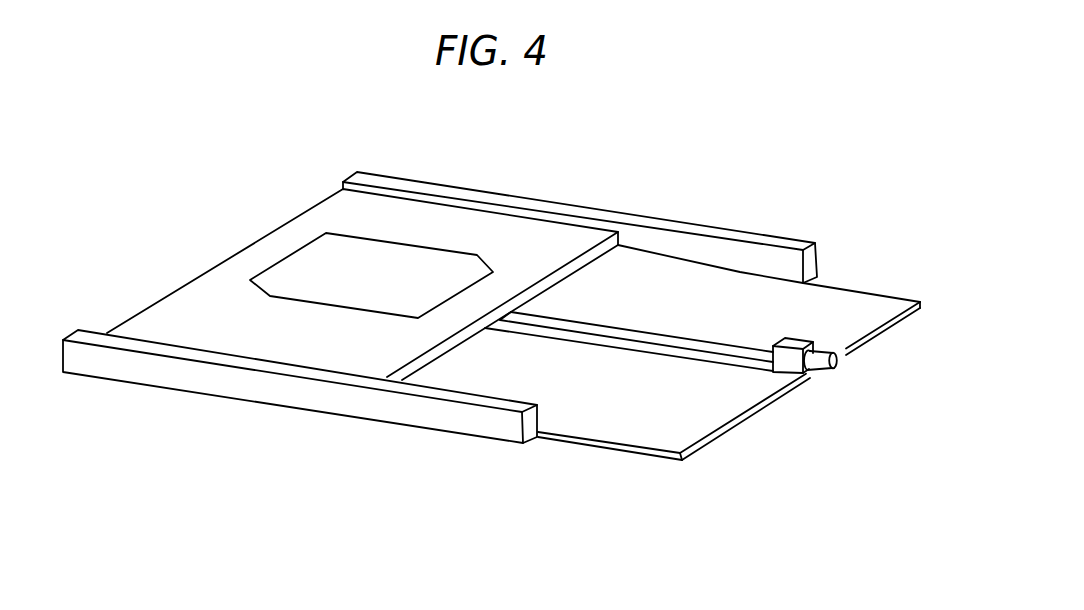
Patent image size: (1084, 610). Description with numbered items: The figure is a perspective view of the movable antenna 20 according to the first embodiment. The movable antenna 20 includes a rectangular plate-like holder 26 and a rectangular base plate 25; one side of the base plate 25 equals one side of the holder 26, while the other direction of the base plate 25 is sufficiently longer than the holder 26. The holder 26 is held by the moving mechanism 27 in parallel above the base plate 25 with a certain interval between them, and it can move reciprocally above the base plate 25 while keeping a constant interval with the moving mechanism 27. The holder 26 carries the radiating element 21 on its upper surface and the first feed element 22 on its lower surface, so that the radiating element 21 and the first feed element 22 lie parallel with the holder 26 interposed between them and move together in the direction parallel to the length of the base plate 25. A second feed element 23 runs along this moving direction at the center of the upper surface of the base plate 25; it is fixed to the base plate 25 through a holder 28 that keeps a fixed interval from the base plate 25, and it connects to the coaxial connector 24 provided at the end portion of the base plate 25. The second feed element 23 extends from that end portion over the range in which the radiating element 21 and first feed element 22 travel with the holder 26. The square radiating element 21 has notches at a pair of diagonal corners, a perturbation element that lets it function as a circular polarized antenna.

The movable antenna 20 is at (241, 444).
The radiating element 21 is at (306, 258).
The first feed element 22 is at (513, 313).
The second feed element 23 is at (742, 350).
The coaxial connector 24 is at (820, 363).
The base plate 25 is at (877, 307).
The holder 26 is at (192, 297).
The moving mechanism 27 is at (505, 195).
The holder 28 is at (717, 367).